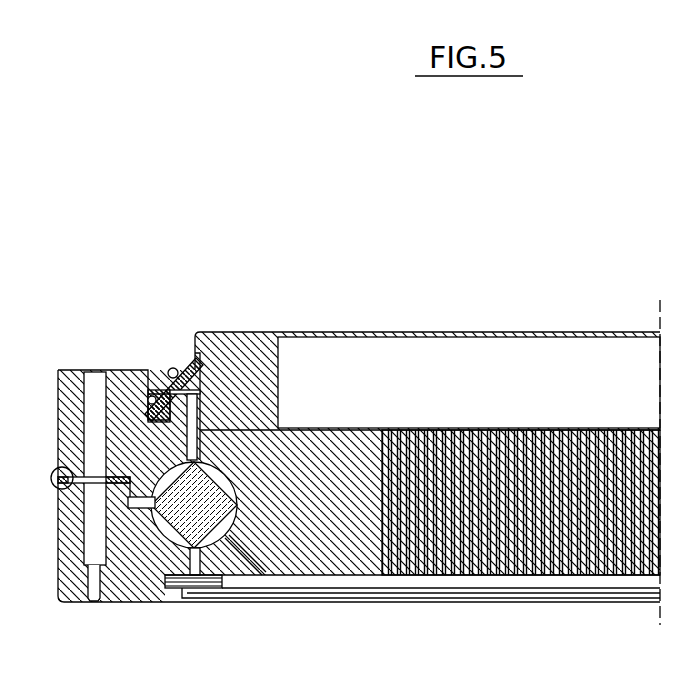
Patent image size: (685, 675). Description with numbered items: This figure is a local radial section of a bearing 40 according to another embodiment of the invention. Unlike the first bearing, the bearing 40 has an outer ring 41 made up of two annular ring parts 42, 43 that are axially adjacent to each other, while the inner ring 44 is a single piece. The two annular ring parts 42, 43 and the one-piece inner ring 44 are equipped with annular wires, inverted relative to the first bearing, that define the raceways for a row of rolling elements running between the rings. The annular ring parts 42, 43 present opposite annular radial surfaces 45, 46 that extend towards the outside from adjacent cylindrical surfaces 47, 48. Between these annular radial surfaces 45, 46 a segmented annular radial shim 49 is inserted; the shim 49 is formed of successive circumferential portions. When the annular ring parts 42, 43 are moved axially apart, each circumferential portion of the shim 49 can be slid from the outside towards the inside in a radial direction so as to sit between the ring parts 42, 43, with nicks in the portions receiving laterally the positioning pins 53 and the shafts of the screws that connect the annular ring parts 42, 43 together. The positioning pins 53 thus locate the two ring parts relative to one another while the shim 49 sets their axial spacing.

The bearing 40 is at (118, 338).
The outer ring 41 is at (127, 592).
The annular ring part 42 is at (65, 537).
The annular ring part 43 is at (65, 433).
The one-piece inner ring 44 is at (310, 478).
The annular radial surface 45 is at (67, 496).
The annular radial surface 46 is at (68, 472).
The cylindrical surface 47 is at (94, 588).
The cylindrical surface 48 is at (151, 396).
The segmented annular radial shim 49 is at (65, 492).
The positioning pin 53 is at (95, 405).